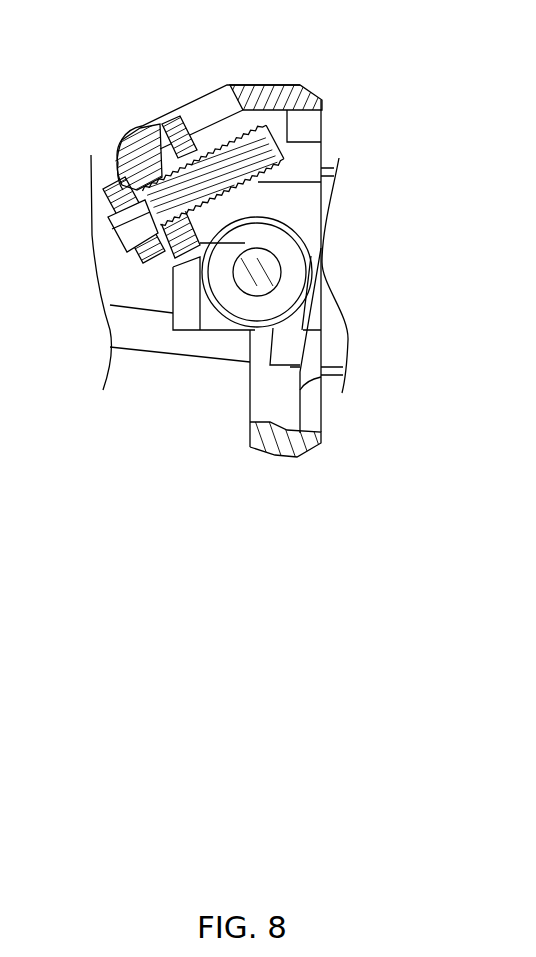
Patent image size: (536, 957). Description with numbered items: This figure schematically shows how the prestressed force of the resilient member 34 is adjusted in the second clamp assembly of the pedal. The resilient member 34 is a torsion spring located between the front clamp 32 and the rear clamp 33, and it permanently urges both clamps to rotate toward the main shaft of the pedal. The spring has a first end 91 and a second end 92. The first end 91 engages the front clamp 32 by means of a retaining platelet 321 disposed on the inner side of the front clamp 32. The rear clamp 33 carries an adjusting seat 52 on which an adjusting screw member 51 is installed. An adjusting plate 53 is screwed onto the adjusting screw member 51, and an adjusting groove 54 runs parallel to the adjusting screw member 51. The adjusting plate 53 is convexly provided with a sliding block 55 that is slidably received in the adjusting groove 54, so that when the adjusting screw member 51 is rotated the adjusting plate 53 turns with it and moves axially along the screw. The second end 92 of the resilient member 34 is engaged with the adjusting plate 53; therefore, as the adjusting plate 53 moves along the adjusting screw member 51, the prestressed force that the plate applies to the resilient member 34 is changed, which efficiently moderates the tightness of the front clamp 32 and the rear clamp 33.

The front clamp 32 is at (277, 458).
The retaining platelet 321 is at (305, 353).
The rear clamp 33 is at (272, 83).
The resilient member 34 is at (290, 273).
The adjusting screw member 51 is at (118, 228).
The adjusting seat 52 is at (150, 268).
The adjusting plate 53 is at (230, 210).
The adjusting groove 54 is at (212, 103).
The sliding block 55 is at (170, 118).
The first end 91 is at (292, 357).
The second end 92 is at (157, 168).